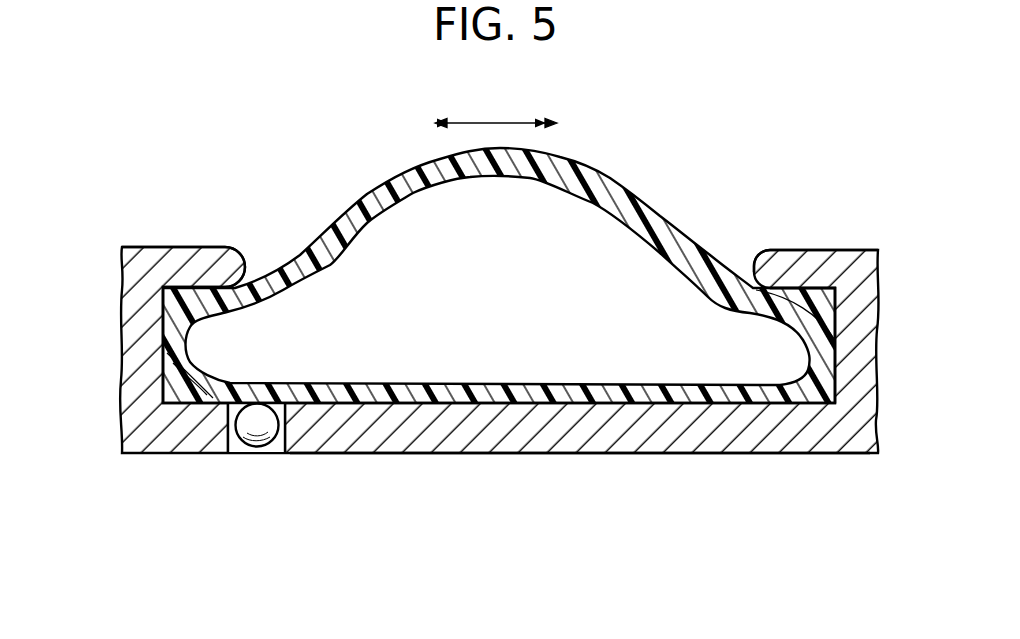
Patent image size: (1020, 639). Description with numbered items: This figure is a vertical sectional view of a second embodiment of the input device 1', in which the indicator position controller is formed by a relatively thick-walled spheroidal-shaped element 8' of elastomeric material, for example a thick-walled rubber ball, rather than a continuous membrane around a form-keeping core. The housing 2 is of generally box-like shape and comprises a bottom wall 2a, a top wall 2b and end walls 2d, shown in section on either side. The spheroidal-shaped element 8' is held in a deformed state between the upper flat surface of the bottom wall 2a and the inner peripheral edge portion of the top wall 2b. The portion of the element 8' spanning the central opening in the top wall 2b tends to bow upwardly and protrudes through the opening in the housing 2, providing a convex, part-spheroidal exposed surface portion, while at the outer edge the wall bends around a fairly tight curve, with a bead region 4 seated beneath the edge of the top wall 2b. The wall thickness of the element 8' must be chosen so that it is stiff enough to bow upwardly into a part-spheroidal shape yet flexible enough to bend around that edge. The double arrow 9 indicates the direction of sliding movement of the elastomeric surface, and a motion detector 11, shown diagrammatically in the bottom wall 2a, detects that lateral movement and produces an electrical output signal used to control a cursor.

The pump device 1' is at (493, 308).
The housing 2 is at (667, 458).
The bottom wall 2a is at (515, 432).
The top wall 2b is at (800, 268).
The end walls 2d is at (130, 345).
The sealing bead 4 is at (750, 268).
The spheroidal-shaped element 8' is at (499, 273).
The double arrow 9 is at (498, 122).
The motion detector 11 is at (258, 447).